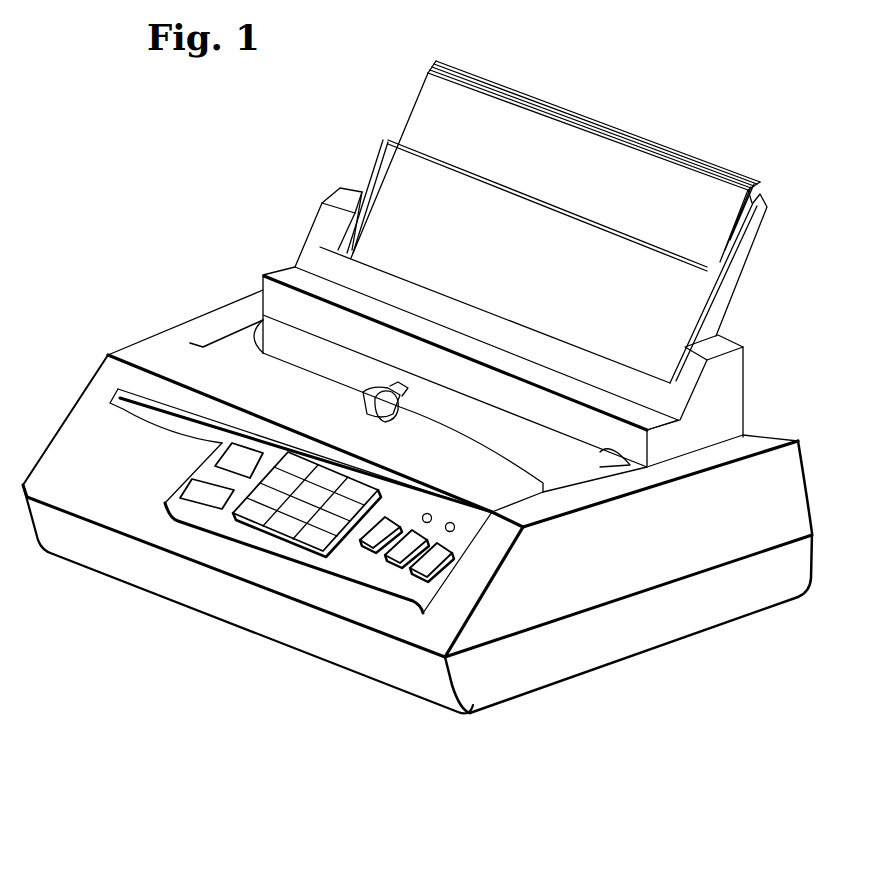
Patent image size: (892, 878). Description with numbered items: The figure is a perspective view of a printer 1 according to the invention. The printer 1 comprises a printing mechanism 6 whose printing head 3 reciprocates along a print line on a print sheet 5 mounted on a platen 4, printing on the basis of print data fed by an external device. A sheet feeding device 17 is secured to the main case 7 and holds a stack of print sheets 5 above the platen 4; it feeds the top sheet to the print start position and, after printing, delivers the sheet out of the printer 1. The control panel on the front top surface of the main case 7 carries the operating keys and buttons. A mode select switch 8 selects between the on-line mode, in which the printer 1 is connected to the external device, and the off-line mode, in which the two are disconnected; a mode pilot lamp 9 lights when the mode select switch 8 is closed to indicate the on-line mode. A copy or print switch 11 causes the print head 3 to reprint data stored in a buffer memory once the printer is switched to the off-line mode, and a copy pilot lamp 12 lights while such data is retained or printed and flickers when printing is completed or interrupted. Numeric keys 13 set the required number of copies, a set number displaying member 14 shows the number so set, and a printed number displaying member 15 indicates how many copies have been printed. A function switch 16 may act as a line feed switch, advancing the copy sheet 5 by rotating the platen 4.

The printer 1 is at (238, 713).
The printing head 3 is at (389, 410).
The platen 4 is at (608, 466).
The print sheet 5 is at (597, 153).
The printing mechanism 6 is at (362, 393).
The main case 7 is at (139, 505).
The mode select switch 8 is at (412, 563).
The mode pilot lamp 9 is at (453, 532).
The copy or print switch 11 is at (390, 556).
The copy pilot lamp 12 is at (432, 516).
The numeric keys 13 is at (288, 505).
The set number displaying member 14 is at (235, 460).
The printed number displaying member 15 is at (210, 494).
The function switch 16 is at (367, 540).
The sheet feeding device 17 is at (752, 300).